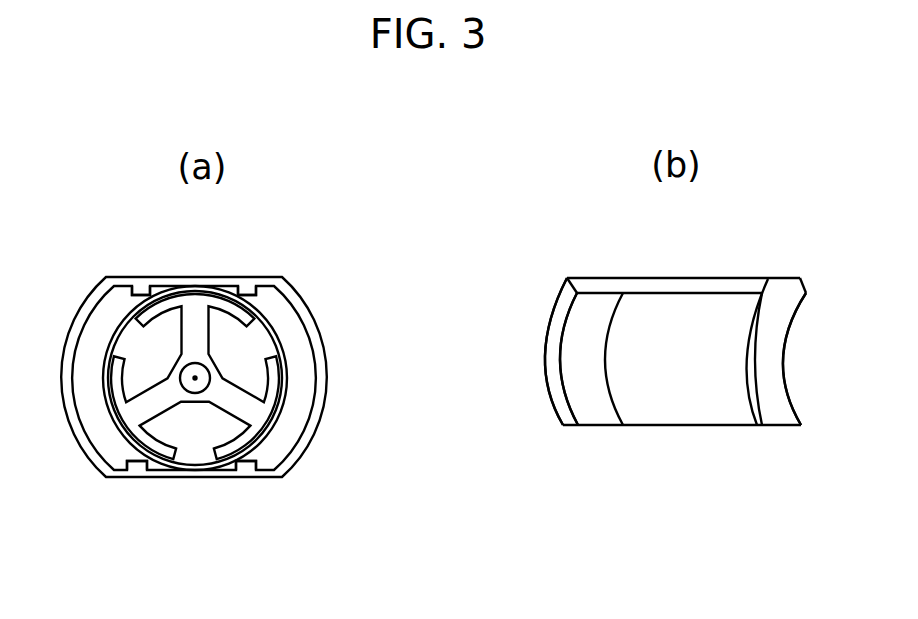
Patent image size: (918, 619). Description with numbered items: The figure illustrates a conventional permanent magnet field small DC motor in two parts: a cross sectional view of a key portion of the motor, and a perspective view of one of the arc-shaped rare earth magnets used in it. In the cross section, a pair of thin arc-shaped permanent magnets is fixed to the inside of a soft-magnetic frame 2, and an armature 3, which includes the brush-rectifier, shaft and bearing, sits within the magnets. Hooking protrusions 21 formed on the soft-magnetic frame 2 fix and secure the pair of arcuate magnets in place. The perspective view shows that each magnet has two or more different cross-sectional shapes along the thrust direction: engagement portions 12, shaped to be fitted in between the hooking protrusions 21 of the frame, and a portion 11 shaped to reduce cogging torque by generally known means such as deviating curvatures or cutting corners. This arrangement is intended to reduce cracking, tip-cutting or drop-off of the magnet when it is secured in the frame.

The soft-magnetic frame 2 is at (235, 277).
The armature 3 is at (222, 363).
The hooking protrusion 21 is at (245, 462).
The portion of magnet for reducing cogging torque 11 is at (690, 383).
The engagement portion of the magnet 12 is at (598, 289).